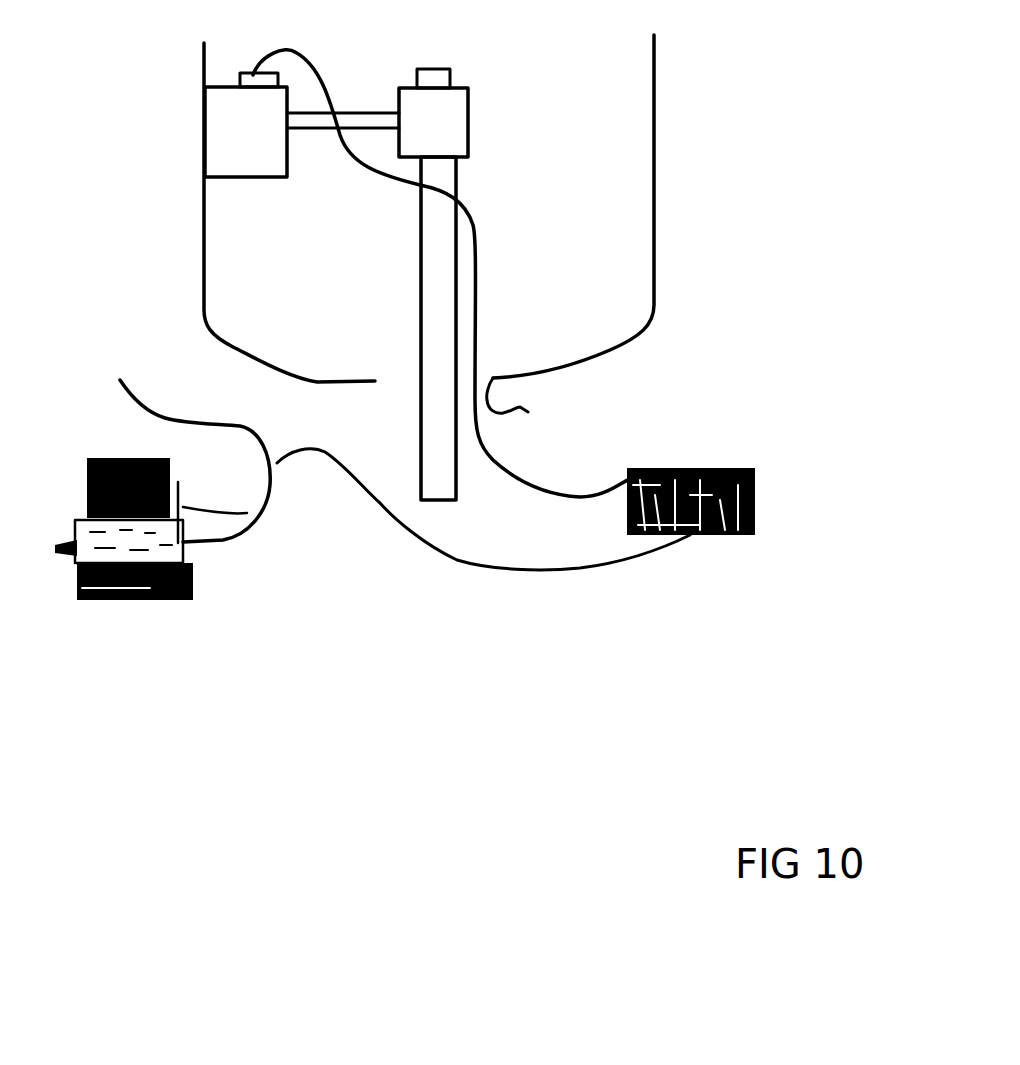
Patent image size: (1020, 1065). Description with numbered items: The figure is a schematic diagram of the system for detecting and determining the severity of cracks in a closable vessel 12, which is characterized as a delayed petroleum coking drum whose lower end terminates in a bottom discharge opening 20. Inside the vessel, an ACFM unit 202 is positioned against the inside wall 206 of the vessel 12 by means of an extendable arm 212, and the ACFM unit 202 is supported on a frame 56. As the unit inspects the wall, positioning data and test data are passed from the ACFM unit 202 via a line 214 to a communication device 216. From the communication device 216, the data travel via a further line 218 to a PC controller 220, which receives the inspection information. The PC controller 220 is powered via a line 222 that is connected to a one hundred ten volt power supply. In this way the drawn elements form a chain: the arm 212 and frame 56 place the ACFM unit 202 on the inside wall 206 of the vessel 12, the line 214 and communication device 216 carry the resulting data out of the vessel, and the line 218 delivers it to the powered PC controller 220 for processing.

The vessel 12 is at (655, 232).
The bottom discharge opening 20 is at (527, 412).
The frame 56 is at (472, 123).
The ACFM unit 202 is at (243, 183).
The inside wall 206 is at (215, 311).
The extendable arm 212 is at (355, 100).
The line 214 is at (477, 230).
The communication device 216 is at (747, 468).
The line 218 is at (650, 557).
The PC controller 220 is at (180, 597).
The line 222 is at (270, 431).